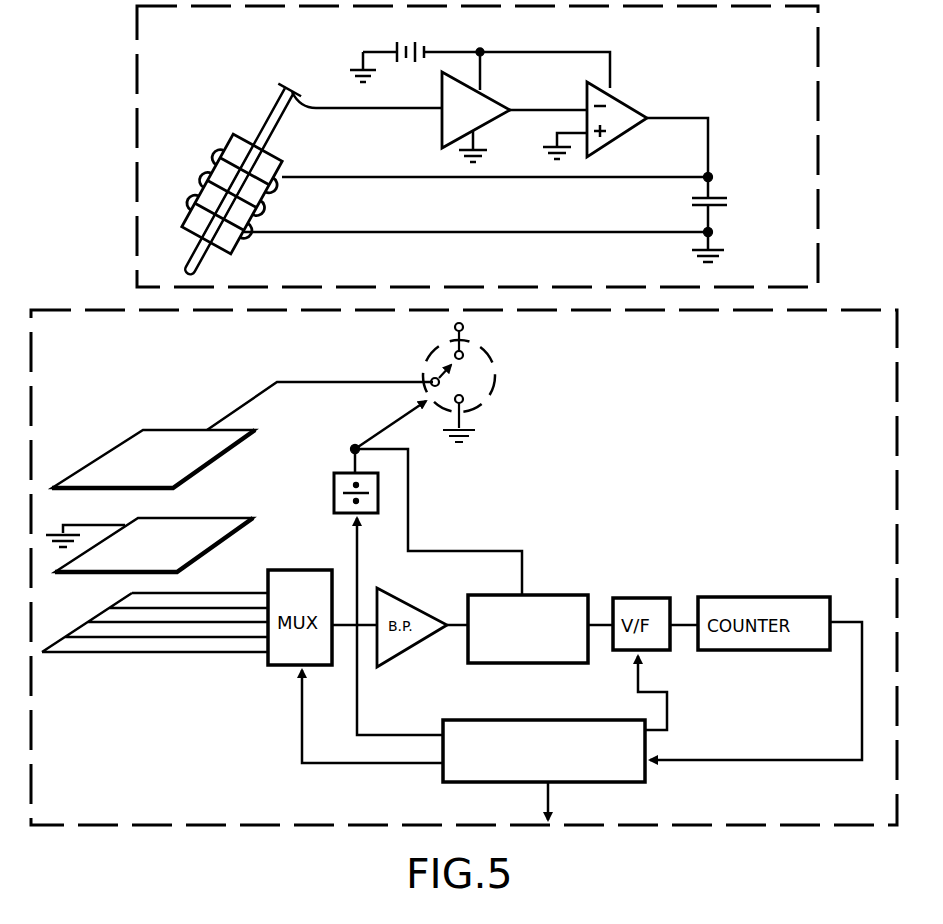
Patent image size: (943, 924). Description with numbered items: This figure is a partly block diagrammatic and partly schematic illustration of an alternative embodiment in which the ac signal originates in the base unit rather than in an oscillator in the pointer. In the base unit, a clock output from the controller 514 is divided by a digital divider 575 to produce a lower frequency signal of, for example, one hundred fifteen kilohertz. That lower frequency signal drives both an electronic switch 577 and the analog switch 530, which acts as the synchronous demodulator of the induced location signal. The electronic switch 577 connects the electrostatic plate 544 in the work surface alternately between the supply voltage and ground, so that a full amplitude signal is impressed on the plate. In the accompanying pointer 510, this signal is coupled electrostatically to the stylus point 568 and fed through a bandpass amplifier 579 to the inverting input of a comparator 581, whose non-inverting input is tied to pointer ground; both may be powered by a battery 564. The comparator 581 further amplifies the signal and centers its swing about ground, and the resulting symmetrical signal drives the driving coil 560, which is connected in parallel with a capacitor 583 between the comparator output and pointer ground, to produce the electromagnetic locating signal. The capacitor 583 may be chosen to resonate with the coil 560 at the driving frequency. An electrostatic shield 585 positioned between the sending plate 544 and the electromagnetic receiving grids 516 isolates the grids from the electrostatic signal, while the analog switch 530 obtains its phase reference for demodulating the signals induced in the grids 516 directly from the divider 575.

The pointer 510 is at (137, 212).
The stylus point 568 is at (268, 112).
The driving coil 560 is at (264, 200).
The battery 564 is at (397, 50).
The bandpass amplifier 579 is at (494, 102).
The comparator 581 is at (633, 102).
The capacitor 583 is at (716, 196).
The electronic switch 577 is at (494, 388).
The digital divider 575 is at (334, 476).
The electrostatic plate 544 is at (180, 428).
The electrostatic shield 585 is at (216, 517).
The electromagnetic receiving grids 516 is at (198, 654).
The analog switch 530 is at (573, 595).
The controller 514 is at (645, 780).